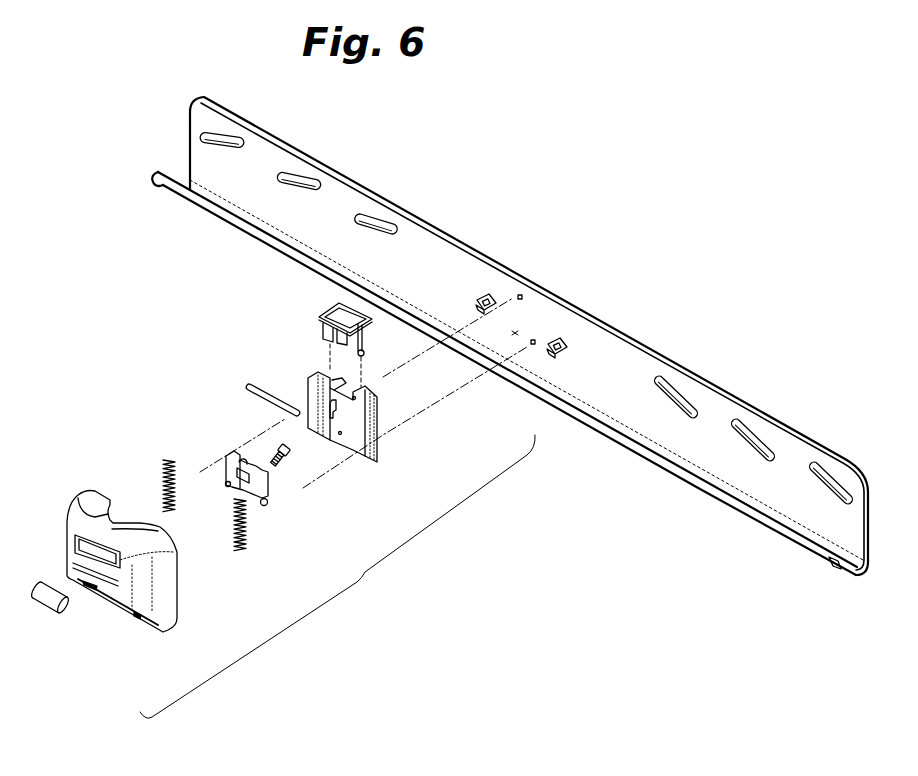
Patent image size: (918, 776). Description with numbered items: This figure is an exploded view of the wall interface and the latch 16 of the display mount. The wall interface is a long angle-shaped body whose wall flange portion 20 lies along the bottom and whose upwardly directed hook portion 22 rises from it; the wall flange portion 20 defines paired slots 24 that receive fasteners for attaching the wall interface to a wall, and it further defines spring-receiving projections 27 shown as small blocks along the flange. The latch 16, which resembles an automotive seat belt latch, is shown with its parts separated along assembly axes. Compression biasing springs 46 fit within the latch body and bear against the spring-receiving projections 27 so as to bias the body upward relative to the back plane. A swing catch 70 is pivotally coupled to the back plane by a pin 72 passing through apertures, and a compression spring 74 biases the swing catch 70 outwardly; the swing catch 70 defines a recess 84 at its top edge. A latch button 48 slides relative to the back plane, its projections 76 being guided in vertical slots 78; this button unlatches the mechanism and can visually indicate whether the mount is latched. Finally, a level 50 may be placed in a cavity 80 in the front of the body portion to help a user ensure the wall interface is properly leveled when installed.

The latch 16 is at (337, 508).
The wall flange portion 20 is at (866, 517).
The upwardly directed hook portion 22 is at (832, 558).
The paired slots 24 is at (395, 226).
The spring-receiving projections 27 is at (550, 336).
The compression biasing springs 46 is at (163, 478).
The latch button 48 is at (330, 305).
The level 50 is at (58, 615).
The swing catch 70 is at (267, 480).
The pin 72 is at (256, 400).
The compression spring 74 is at (290, 456).
The projections 76 is at (358, 352).
The vertical slots 78 is at (330, 406).
The cavity 80 is at (110, 585).
The recess 84 is at (231, 490).